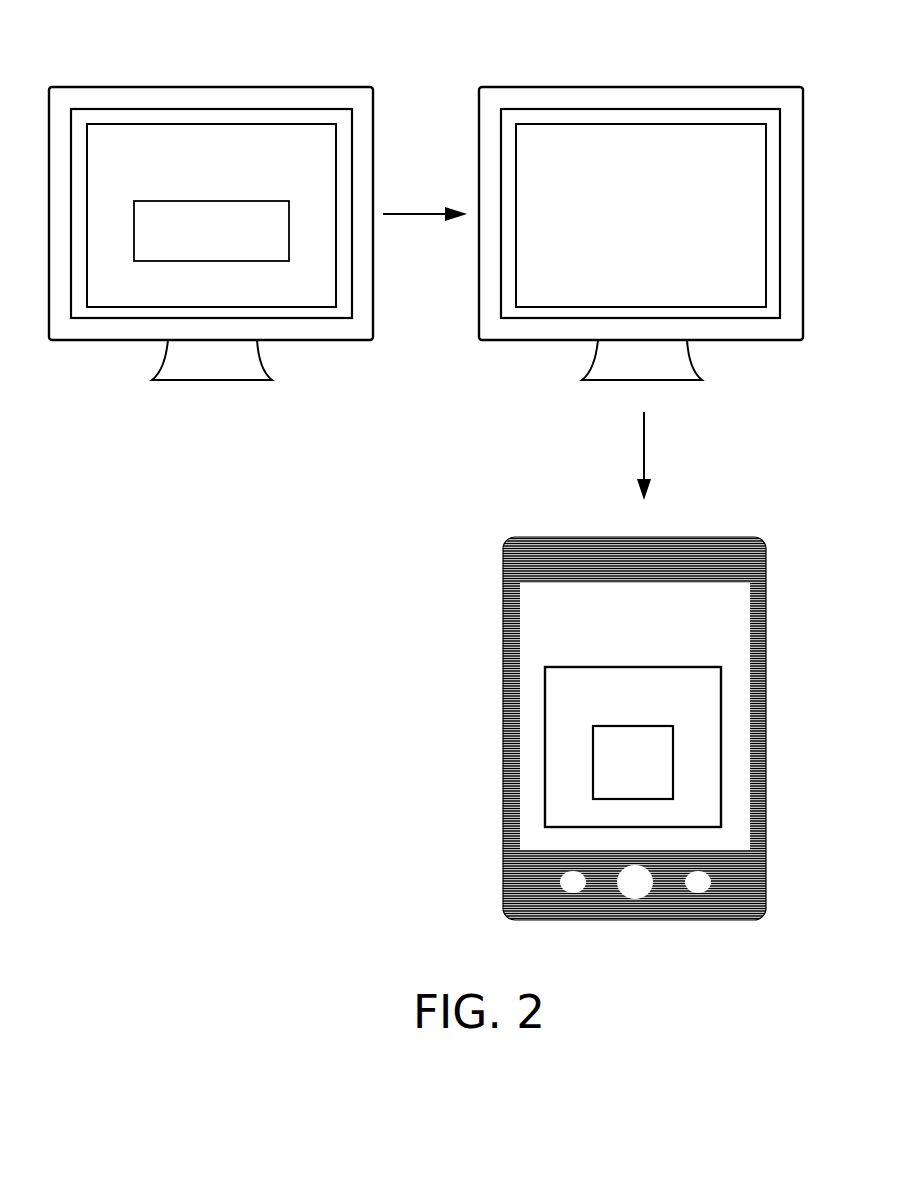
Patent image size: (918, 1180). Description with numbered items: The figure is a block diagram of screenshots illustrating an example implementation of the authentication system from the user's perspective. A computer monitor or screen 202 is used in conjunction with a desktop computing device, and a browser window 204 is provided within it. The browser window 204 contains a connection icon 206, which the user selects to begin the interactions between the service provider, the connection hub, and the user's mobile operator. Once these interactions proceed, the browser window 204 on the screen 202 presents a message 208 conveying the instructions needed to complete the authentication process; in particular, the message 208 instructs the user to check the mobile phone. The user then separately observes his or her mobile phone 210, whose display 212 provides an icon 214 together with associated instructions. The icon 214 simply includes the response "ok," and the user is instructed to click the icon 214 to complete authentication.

The computer monitor or screen 202 is at (223, 87).
The browser window 204 is at (293, 148).
The connection icon 206 is at (195, 249).
The message 208 is at (730, 245).
The mobile phone 210 is at (678, 616).
The display 212 is at (632, 666).
The icon 214 is at (660, 800).